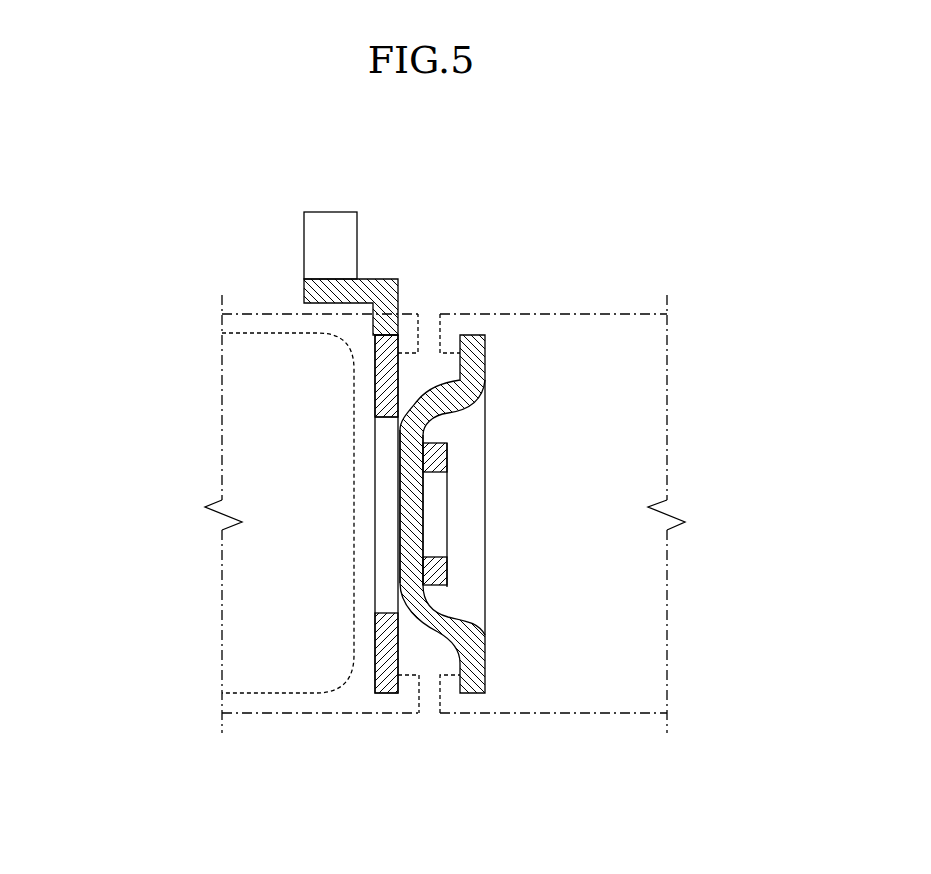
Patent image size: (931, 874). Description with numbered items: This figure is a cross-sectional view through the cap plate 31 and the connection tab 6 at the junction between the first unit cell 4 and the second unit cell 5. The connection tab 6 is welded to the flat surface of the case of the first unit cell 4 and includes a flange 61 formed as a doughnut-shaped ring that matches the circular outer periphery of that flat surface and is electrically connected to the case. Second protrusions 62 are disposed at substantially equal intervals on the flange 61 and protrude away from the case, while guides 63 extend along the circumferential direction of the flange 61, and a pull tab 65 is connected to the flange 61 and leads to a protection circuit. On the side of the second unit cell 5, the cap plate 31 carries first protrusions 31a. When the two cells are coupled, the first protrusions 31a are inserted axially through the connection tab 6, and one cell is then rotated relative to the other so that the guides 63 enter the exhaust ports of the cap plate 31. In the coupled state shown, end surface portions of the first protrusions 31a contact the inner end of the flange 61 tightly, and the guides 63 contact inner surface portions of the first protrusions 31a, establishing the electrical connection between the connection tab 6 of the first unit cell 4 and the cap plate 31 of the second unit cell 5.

The first unit cell 4 is at (273, 714).
The second unit cell 5 is at (628, 714).
The connection tab 6 is at (383, 710).
The cap plate 31 is at (472, 710).
The first protrusions 31a is at (422, 555).
The flange 61 is at (380, 368).
The second protrusions 62 is at (380, 412).
The guides 63 is at (447, 443).
The pull tab 65 is at (370, 279).